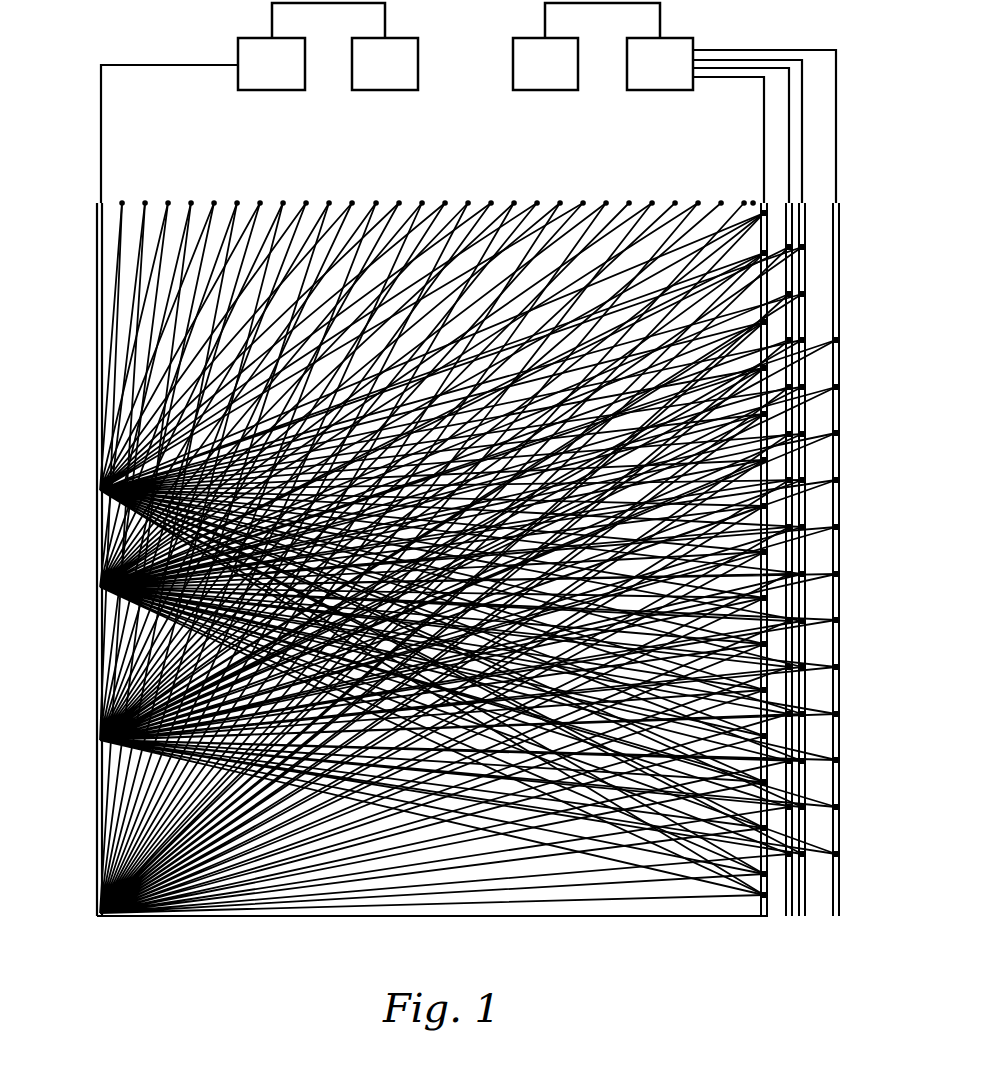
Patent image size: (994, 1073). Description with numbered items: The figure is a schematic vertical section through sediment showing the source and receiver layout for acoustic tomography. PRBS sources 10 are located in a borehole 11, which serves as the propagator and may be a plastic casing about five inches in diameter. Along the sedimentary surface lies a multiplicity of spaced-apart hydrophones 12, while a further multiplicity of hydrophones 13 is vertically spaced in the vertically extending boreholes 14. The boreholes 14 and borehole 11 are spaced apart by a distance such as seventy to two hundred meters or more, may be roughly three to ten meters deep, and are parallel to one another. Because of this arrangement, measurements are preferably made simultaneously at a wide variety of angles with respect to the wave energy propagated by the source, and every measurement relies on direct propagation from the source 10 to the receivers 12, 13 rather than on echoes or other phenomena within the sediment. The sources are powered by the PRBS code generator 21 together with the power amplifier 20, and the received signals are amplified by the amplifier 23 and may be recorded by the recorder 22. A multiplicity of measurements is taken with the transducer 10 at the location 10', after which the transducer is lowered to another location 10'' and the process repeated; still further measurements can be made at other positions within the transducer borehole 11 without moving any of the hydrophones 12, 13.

The PRBS source 10 is at (418, 549).
The transducer location 10' is at (437, 549).
The transducer location 10'' is at (437, 549).
The borehole 11 is at (100, 203).
The hydrophones 12 is at (673, 203).
The hydrophones 13 is at (842, 390).
The boreholes 14 is at (836, 208).
The power amplifier 20 is at (271, 64).
The PRBS code generator 21 is at (385, 64).
The recorder 22 is at (545, 64).
The amplifier 23 is at (660, 64).